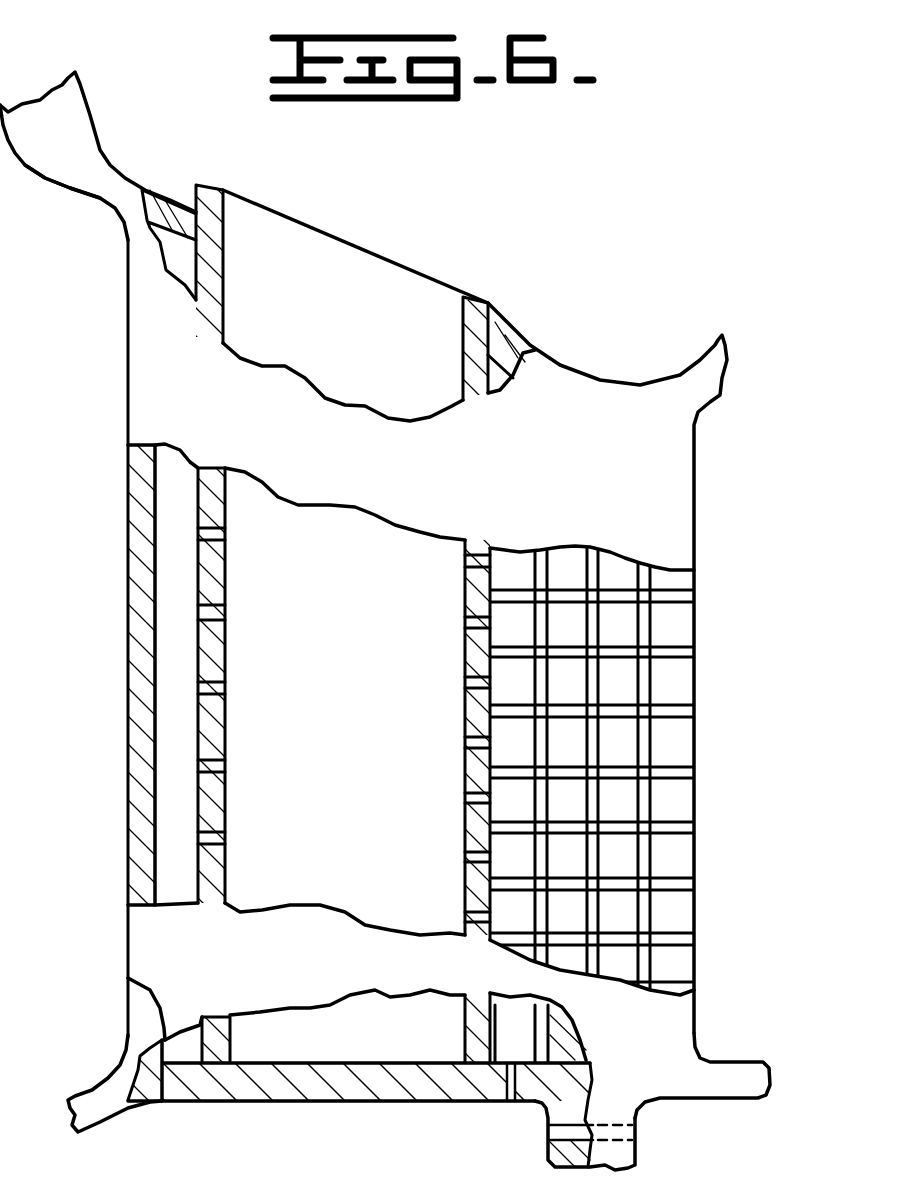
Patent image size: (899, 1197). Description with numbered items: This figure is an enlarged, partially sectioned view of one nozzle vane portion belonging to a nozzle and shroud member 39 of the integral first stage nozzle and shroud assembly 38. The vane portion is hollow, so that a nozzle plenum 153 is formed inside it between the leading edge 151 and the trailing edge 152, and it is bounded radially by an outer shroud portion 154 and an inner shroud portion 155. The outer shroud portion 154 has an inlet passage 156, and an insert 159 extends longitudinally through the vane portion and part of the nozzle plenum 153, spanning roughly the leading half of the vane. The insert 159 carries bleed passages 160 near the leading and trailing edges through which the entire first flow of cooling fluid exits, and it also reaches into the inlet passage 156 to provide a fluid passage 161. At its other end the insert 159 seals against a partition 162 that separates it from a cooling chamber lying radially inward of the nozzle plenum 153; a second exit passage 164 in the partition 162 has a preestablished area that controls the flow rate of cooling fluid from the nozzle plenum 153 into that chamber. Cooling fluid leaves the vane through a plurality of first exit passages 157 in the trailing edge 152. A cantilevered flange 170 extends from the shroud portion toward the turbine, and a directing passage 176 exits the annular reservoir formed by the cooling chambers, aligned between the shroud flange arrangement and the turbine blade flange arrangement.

The first stage nozzle and shroud assembly 38 is at (90, 112).
The nozzle and shroud member 39 is at (70, 192).
The leading edge 151 is at (128, 385).
The trailing edge 152 is at (694, 517).
The nozzle plenum 153 is at (190, 592).
The outer shroud portion 154 is at (164, 268).
The inner shroud portion 155 is at (110, 1062).
The inlet passage 156 is at (323, 245).
The first exit passages 157 is at (694, 652).
The insert 159 is at (440, 280).
The bleed passages 160 is at (225, 535).
The fluid passage 161 is at (346, 725).
The partition 162 is at (128, 978).
The second exit passage 164 is at (506, 1088).
The cantilevered flange 170 is at (754, 1062).
The directing passage 176 is at (592, 1088).